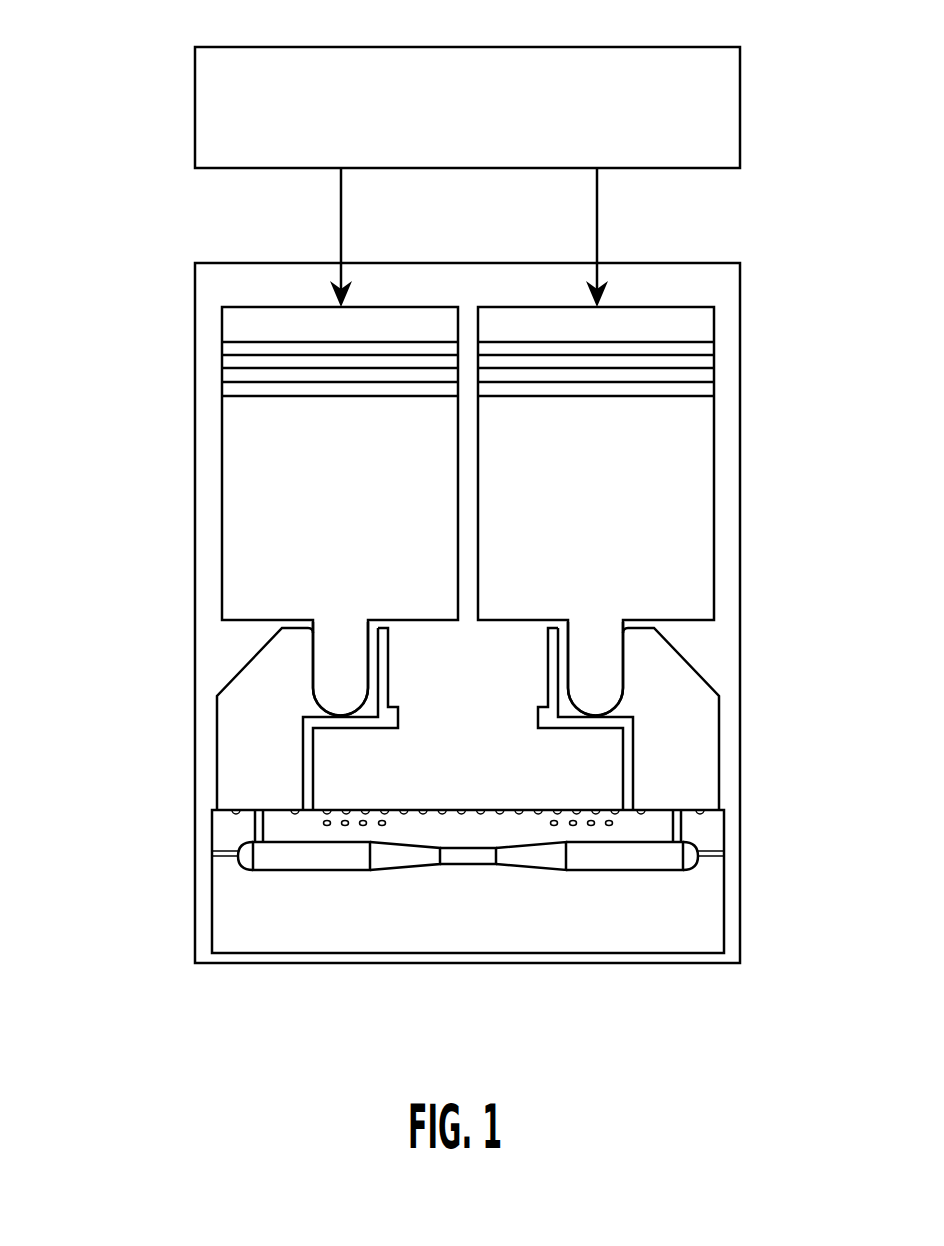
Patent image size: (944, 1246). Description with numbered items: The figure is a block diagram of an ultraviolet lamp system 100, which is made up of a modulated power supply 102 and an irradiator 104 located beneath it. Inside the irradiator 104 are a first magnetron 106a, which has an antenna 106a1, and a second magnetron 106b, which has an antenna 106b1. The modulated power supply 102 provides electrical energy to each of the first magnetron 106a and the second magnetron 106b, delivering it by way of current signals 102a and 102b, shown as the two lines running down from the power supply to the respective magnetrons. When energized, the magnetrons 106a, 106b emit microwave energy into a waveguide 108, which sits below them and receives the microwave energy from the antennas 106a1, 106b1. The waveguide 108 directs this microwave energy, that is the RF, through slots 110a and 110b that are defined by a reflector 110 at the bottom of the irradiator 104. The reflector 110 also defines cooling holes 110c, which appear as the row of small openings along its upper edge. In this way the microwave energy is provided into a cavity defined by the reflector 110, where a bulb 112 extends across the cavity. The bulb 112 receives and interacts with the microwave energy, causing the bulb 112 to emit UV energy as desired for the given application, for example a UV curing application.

The ultraviolet lamp system 100 is at (106, 100).
The modulated power supply 102 is at (487, 139).
The current signal 102a is at (340, 216).
The current signal 102b is at (598, 210).
The irradiator 104 is at (740, 358).
The first magnetron 106a is at (362, 504).
The second magnetron 106b is at (621, 504).
The antenna 106a1 is at (328, 677).
The antenna 106b1 is at (603, 670).
The waveguide 108 is at (243, 751).
The reflector 110 is at (722, 900).
The slot 110a is at (253, 828).
The slot 110b is at (683, 830).
The cooling holes 110c is at (325, 825).
The bulb 112 is at (273, 857).